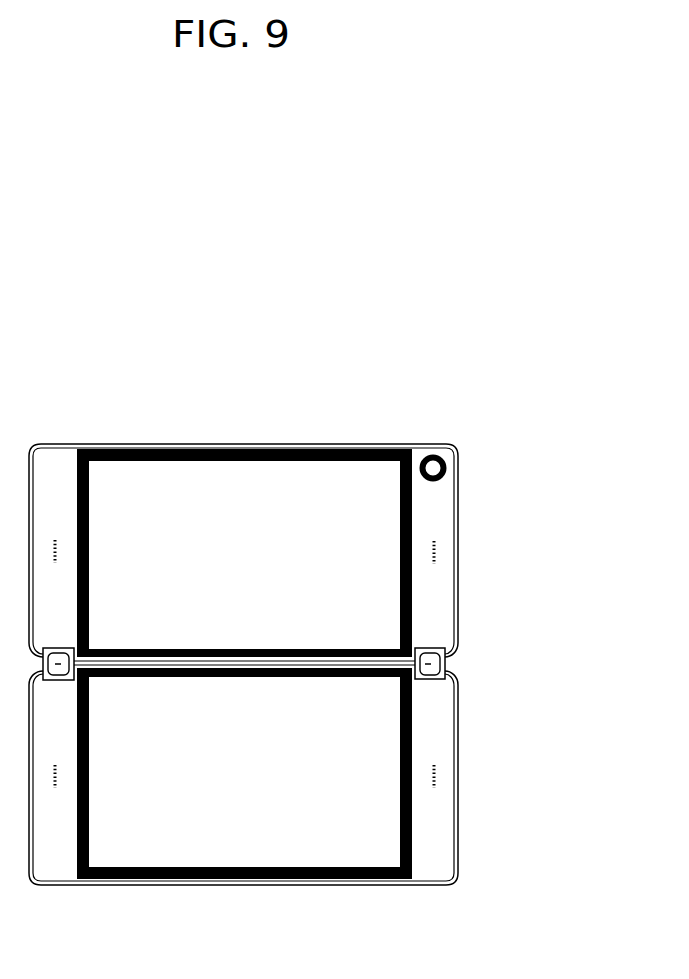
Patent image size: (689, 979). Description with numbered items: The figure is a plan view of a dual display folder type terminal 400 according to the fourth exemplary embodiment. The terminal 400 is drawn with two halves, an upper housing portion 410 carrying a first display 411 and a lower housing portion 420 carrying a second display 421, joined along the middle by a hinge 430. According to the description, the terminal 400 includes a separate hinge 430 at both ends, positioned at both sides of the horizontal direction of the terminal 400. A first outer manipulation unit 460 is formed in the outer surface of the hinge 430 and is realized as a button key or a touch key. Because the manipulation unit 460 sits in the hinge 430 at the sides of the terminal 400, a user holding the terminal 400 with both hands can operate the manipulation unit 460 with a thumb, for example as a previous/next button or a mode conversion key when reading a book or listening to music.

The dual display folder type terminal 400 is at (313, 647).
The first housing 410 is at (278, 550).
The first display 411 is at (383, 522).
The second housing 420 is at (278, 806).
The second display 421 is at (340, 830).
The hinge 430 is at (284, 674).
The first outer manipulation unit 460 is at (445, 680).